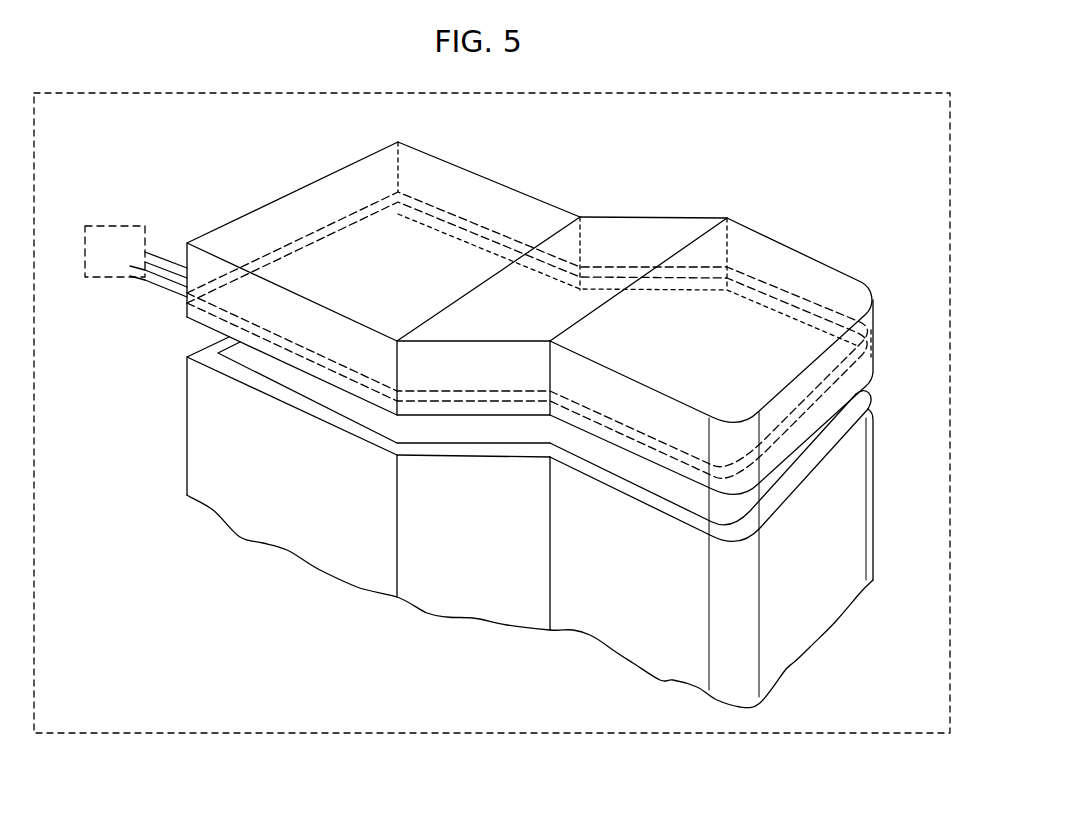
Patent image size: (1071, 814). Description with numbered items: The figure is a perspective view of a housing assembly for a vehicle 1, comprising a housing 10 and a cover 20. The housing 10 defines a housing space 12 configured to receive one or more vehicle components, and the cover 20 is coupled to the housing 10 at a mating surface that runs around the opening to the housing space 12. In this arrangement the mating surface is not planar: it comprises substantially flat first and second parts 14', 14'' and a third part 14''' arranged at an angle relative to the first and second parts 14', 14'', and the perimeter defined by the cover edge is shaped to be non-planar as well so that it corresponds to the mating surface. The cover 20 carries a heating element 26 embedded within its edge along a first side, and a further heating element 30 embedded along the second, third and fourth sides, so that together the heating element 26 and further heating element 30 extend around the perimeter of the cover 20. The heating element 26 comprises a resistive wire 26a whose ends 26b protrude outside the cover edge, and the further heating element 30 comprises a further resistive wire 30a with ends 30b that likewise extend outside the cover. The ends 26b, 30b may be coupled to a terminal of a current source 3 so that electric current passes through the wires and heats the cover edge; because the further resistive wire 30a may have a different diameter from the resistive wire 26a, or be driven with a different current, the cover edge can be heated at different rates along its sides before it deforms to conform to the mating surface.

The vehicle 1 is at (121, 735).
The current source 3 is at (102, 226).
The housing 10 is at (844, 538).
The housing space 12 is at (505, 430).
The first part of the mating surface 14' is at (260, 398).
The second part of the mating surface 14'' is at (710, 544).
The third part of the mating surface 14''' is at (473, 558).
The cover 20 is at (805, 255).
The heating element 26 is at (217, 322).
The resistive wire 26a is at (355, 379).
The ends of the resistive wire 26b is at (157, 282).
The further heating element 30 is at (630, 262).
The further resistive wire 30a is at (484, 226).
The ends of the further resistive wire 30b is at (171, 270).